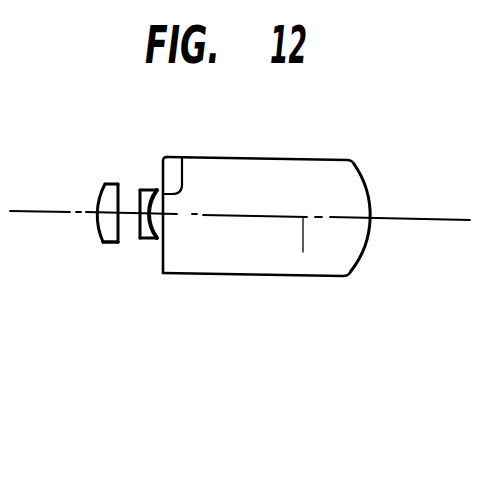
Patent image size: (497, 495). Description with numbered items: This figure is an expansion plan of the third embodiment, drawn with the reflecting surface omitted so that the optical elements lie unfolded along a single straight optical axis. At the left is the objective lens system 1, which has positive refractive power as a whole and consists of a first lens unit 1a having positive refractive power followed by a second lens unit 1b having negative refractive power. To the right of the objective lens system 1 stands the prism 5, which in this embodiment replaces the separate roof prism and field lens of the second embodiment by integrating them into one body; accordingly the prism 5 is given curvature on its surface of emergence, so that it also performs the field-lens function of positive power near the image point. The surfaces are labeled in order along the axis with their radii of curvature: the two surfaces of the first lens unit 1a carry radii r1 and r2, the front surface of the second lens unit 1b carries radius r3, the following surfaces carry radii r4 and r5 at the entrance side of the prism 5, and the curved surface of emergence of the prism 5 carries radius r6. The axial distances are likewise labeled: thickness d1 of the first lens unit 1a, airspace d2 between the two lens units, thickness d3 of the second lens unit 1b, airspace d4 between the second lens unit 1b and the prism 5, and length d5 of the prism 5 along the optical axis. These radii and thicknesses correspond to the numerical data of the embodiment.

The objective lens system 1 is at (170, 373).
The first lens unit 1a is at (110, 245).
The second lens unit 1b is at (148, 240).
The prism 5 is at (272, 275).
The radius of curvature r1 is at (99, 197).
The radius of curvature r2 is at (118, 183).
The radius of curvature r3 is at (140, 190).
The radius of curvature r4 is at (184, 157).
The radius of curvature r5 is at (164, 156).
The radius of curvature r6 is at (357, 168).
The thickness d1 is at (100, 244).
The airspace d2 is at (130, 232).
The thickness d3 is at (152, 240).
The airspace d4 is at (163, 230).
The thickness d5 is at (303, 252).